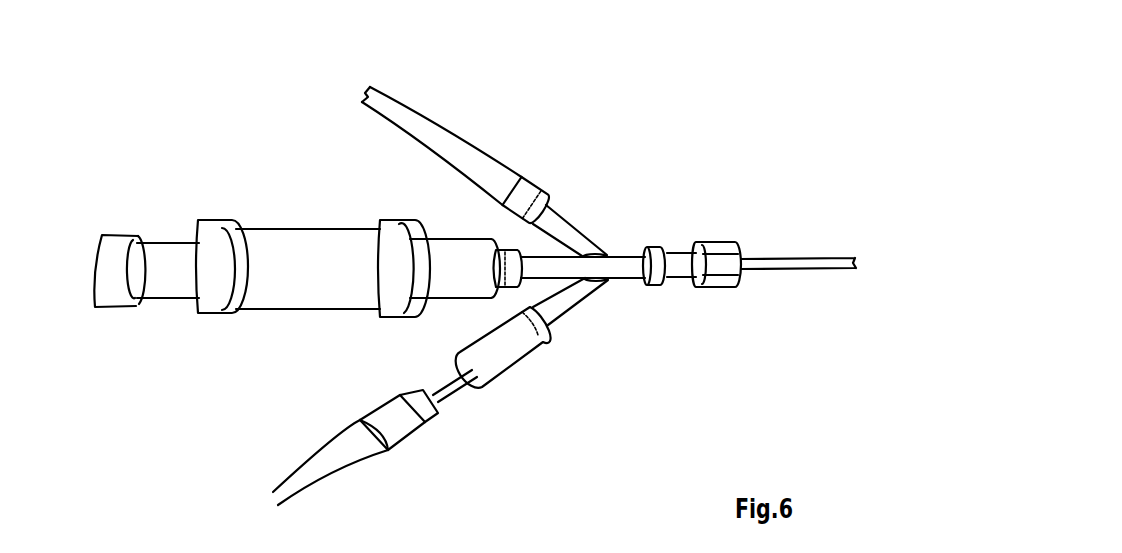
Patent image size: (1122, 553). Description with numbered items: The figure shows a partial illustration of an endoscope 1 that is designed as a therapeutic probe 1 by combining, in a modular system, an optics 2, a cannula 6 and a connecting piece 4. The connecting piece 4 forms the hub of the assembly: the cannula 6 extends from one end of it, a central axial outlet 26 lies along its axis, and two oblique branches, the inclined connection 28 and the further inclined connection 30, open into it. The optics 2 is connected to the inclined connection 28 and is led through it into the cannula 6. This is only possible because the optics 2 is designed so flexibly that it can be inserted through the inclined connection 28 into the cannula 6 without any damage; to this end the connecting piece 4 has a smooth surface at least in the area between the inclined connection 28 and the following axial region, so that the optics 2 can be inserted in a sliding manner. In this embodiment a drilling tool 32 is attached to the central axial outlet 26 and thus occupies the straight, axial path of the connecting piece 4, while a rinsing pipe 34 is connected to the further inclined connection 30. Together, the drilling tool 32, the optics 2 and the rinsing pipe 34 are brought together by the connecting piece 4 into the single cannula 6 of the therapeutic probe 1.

The endoscope 1 is at (690, 207).
The optics 2 is at (525, 383).
The connecting piece 4 is at (610, 218).
The cannula 6 is at (793, 264).
The central axial outlet 26 is at (543, 267).
The inclined connection 28 is at (557, 308).
The further inclined connection 30 is at (580, 235).
The drilling tool 32 is at (285, 237).
The rinsing pipe 34 is at (427, 137).